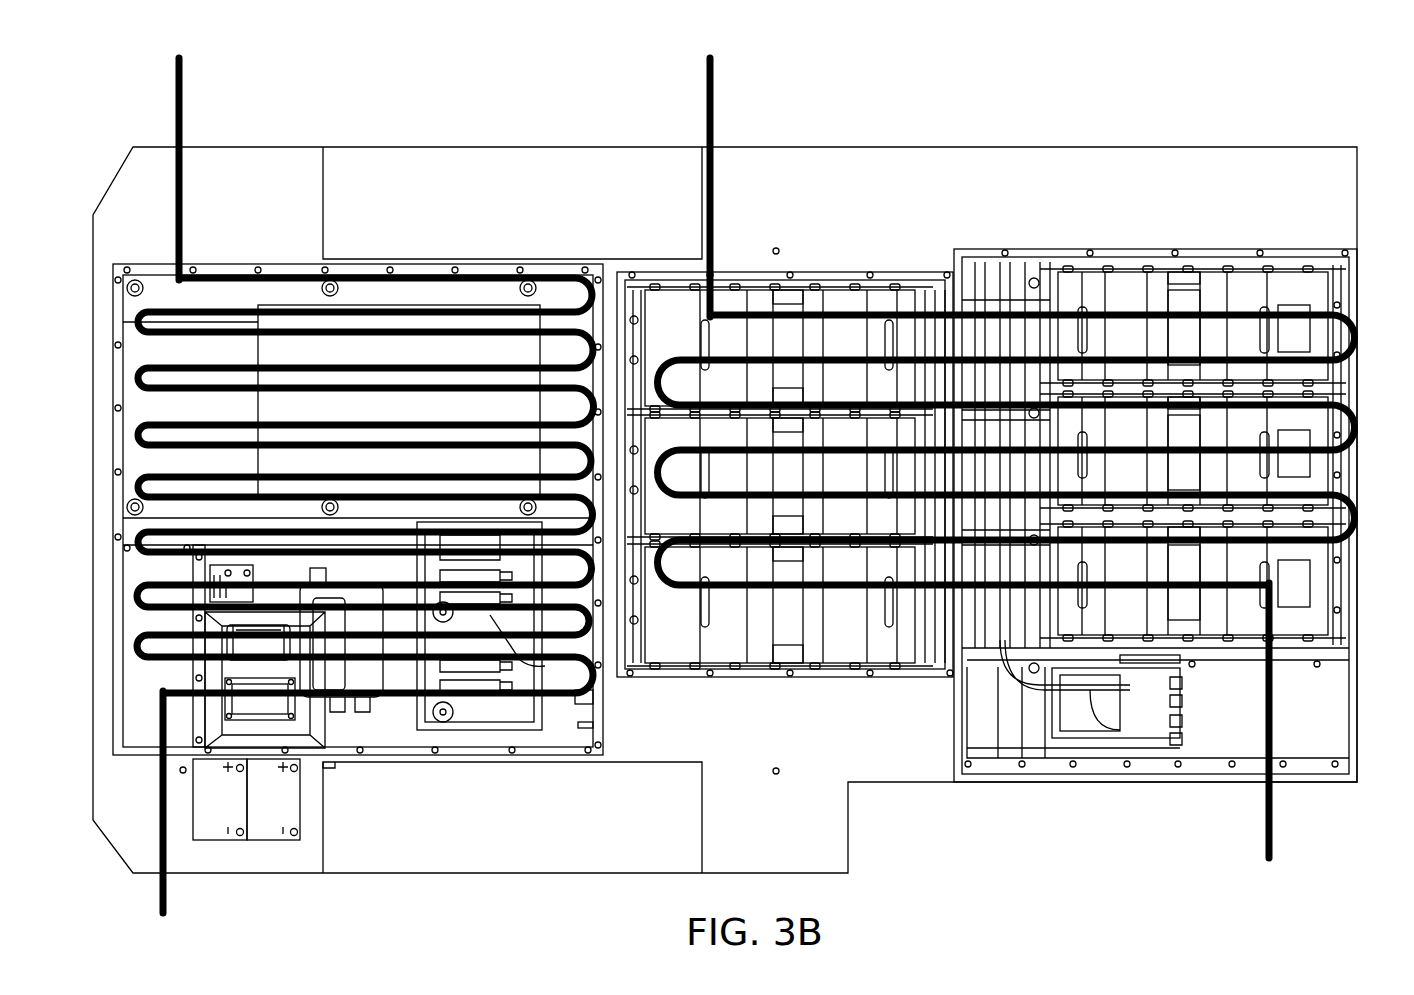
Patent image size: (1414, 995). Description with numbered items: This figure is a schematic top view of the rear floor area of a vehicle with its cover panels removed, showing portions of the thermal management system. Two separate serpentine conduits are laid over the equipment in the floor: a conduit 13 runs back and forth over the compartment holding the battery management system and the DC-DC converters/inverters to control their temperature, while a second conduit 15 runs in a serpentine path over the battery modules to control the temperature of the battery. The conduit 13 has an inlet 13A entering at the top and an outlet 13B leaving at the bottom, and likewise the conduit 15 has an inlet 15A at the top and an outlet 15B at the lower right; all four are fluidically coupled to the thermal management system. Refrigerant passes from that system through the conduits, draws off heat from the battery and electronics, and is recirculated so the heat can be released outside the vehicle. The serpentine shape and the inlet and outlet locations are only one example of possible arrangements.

The conduit 13 is at (138, 596).
The inlet 13A is at (183, 95).
The outlet 13B is at (167, 900).
The conduit 15 is at (1355, 522).
The inlet 15A is at (714, 95).
The outlet 15B is at (1274, 836).